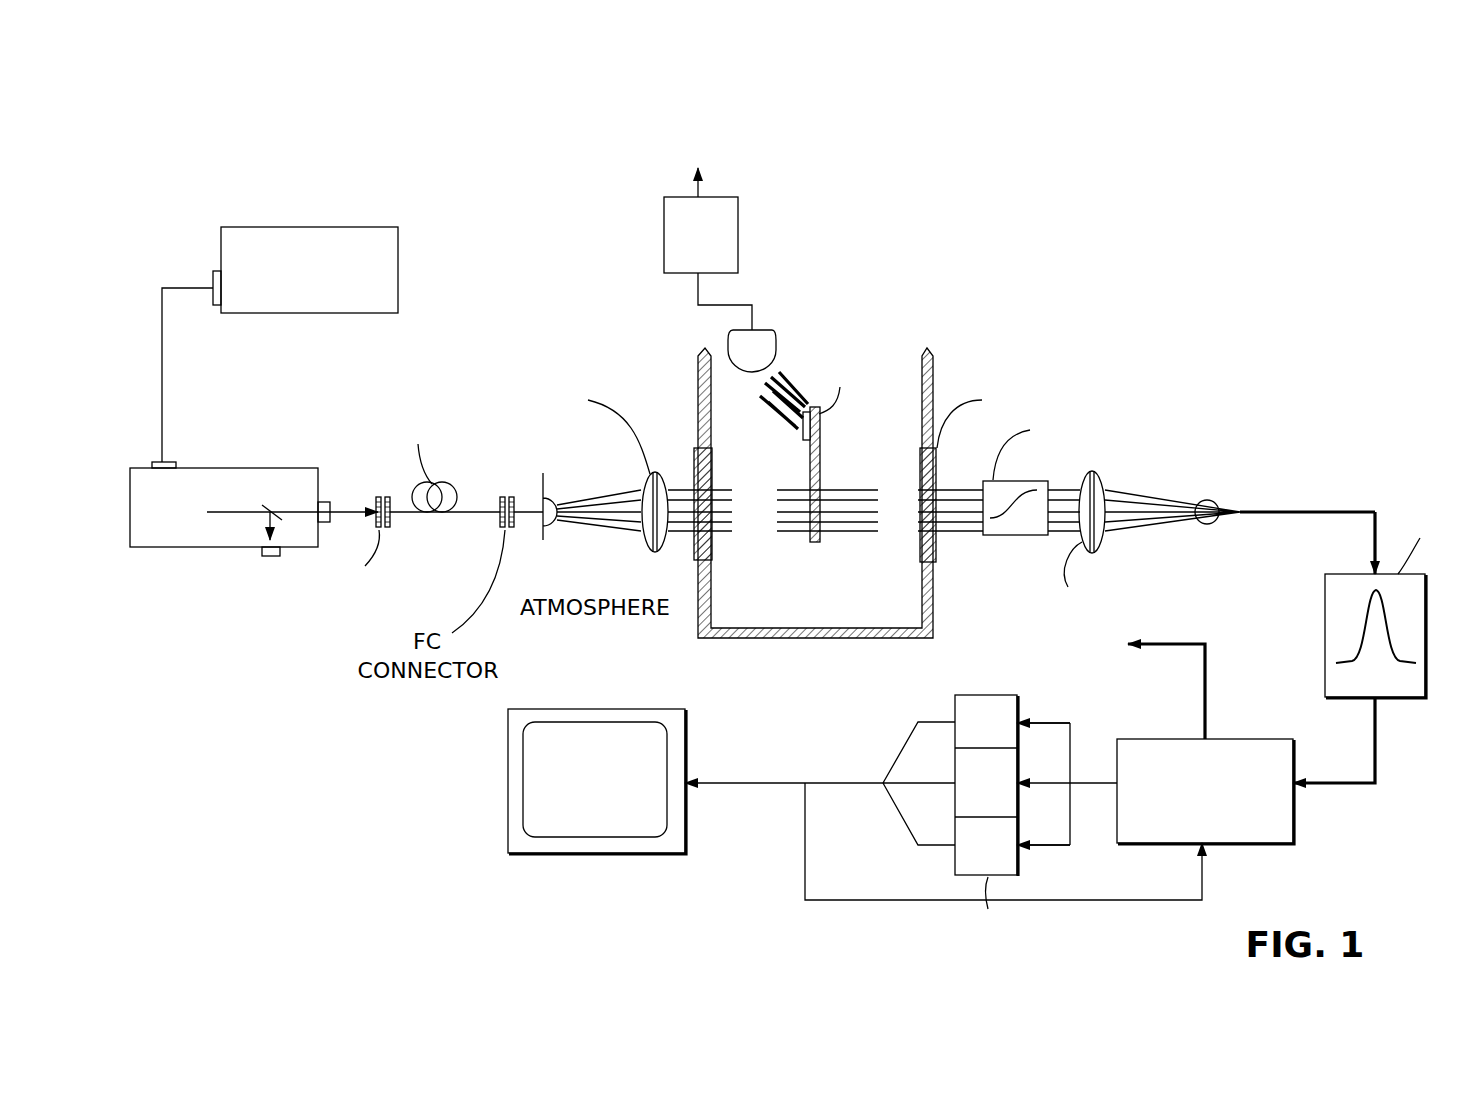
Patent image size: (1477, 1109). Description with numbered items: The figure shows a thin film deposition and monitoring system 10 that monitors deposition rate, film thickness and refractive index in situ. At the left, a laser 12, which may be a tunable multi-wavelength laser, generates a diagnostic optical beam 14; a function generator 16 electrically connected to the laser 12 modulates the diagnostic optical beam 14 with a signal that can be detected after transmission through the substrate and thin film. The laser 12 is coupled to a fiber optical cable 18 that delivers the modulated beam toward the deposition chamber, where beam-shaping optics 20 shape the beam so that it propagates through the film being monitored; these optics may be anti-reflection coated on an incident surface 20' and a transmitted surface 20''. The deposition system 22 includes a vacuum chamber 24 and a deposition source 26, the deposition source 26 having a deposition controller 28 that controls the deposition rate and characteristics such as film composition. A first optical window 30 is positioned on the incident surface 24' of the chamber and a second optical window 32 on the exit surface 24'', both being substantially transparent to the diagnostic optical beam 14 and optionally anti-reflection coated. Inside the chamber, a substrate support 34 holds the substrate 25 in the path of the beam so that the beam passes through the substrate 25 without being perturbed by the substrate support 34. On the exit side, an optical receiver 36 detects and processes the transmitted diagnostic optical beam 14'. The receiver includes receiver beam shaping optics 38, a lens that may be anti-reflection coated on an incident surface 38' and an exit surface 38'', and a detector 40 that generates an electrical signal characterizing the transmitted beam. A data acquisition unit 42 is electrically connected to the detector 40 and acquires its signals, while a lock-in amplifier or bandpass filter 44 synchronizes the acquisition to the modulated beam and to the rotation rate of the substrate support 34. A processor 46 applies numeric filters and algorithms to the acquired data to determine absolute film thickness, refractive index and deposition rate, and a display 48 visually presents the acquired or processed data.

The thin film deposition and monitoring system 10 is at (848, 160).
The laser 12 is at (195, 548).
The diagnostic optical beam 14 is at (350, 560).
The transmitted diagnostic optical beam 14' is at (1086, 496).
The function generator 16 is at (270, 313).
The fiber optical cable 18 is at (448, 487).
The beam-shaping optics 20 is at (536, 442).
The incident surface 20' is at (632, 564).
The transmitted surface 20'' is at (680, 567).
The deposition system 22 is at (816, 316).
The vacuum chamber 24 is at (815, 517).
The incident surface 24' is at (682, 639).
The exit surface 24'' is at (966, 615).
The substrate 25 is at (800, 431).
The deposition source 26 is at (777, 350).
The deposition controller 28 is at (738, 213).
The first optical window 30 is at (694, 478).
The second optical window 32 is at (938, 542).
The substrate support 34 is at (822, 480).
The optical receiver 36 is at (1290, 335).
The receiver beam shaping optics 38 is at (1143, 540).
The incident surface 38' is at (1054, 459).
The exit surface 38'' is at (1136, 580).
The detector 40 is at (1215, 503).
The data acquisition unit 42 is at (1265, 845).
The bandpass filter 44 is at (1426, 634).
The processor 46 is at (1017, 860).
The display 48 is at (600, 840).